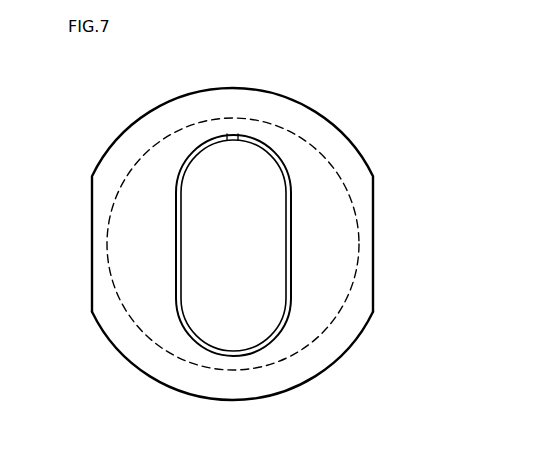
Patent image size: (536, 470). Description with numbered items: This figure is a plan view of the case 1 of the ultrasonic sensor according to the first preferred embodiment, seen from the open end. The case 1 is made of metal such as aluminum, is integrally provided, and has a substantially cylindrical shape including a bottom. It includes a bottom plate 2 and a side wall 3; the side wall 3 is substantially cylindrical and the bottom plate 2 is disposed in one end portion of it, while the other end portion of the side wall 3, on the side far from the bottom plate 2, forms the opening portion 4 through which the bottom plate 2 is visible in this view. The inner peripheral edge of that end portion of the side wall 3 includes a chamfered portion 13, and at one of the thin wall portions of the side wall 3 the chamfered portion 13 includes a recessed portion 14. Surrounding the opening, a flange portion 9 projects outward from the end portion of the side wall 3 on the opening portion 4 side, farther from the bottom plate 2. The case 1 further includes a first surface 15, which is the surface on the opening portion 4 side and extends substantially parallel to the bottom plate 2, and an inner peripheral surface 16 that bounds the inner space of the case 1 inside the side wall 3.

The case 1 is at (302, 71).
The bottom plate 2 is at (215, 160).
The side wall 3 is at (130, 167).
The opening portion 4 is at (283, 318).
The flange portion 9 is at (127, 343).
The chamfered portion 13 is at (185, 163).
The recessed portion 14 is at (230, 136).
The first surface 15 is at (310, 168).
The inner peripheral surface 16 is at (285, 205).